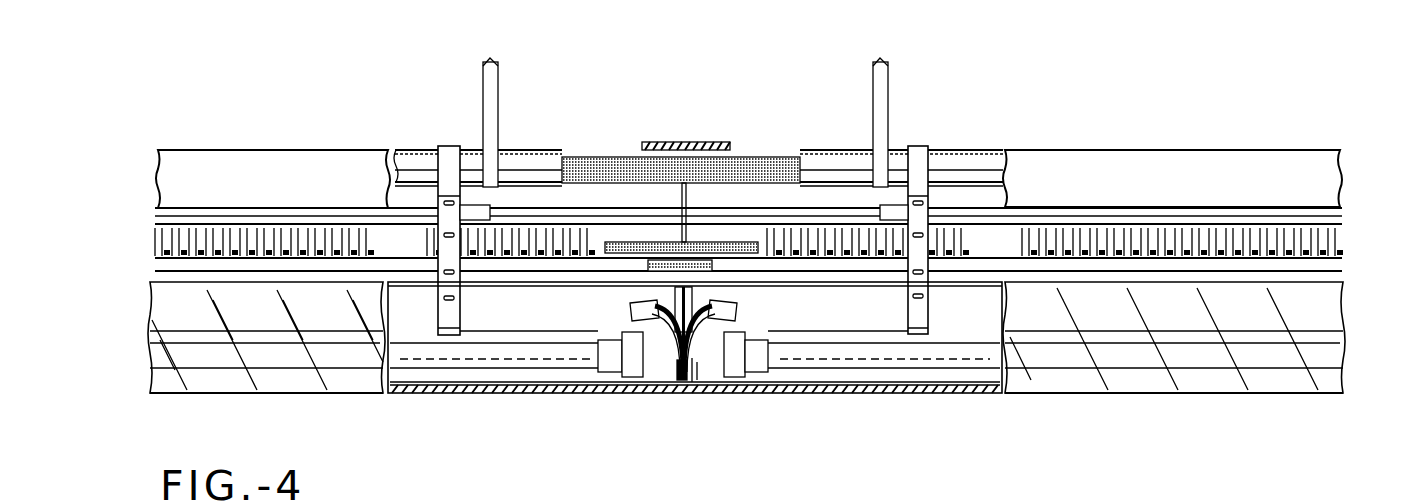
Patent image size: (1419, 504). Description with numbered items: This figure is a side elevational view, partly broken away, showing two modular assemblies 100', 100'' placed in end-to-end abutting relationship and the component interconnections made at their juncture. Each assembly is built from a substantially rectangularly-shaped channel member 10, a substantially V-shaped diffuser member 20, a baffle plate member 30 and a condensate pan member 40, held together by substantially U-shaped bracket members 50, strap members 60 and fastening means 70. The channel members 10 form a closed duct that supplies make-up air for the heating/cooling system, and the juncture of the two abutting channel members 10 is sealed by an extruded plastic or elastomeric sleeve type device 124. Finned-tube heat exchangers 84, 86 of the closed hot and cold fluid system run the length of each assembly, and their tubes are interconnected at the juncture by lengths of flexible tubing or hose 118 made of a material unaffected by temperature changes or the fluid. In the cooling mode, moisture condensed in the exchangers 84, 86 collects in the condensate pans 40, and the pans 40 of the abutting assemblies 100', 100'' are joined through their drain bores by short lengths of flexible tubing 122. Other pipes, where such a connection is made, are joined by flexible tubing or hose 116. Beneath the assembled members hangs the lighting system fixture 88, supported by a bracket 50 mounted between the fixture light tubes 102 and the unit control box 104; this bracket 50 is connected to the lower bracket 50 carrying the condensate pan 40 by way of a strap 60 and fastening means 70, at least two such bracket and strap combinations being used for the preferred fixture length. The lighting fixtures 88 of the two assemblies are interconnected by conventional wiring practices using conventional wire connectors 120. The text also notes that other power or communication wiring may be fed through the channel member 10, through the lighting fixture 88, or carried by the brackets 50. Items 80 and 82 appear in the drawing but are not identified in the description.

The channel member 10 is at (196, 148).
The diffuser member 20 is at (155, 213).
The baffle plate member 30 is at (155, 240).
The condensate pan member 40 is at (155, 265).
The bracket member 50 is at (440, 146).
The strap member 60 is at (463, 204).
The fastening means 70 is at (461, 298).
The cover plate 80 is at (521, 160).
The support rod 82 is at (499, 78).
The heat exchanger 84 is at (753, 180).
The heat exchanger 86 is at (326, 233).
The lighting system fixture 88 is at (248, 394).
The modular assembly 100' is at (616, 413).
The modular assembly 100'' is at (754, 413).
The fixture light tubes 102 is at (517, 370).
The unit control box 104 is at (150, 305).
The flexible tubing or hose 116 is at (614, 157).
The flexible tubing or hose 118 is at (648, 242).
The wire connectors 120 is at (703, 374).
The flexible tubing 122 is at (707, 270).
The sleeve type device 124 is at (679, 142).